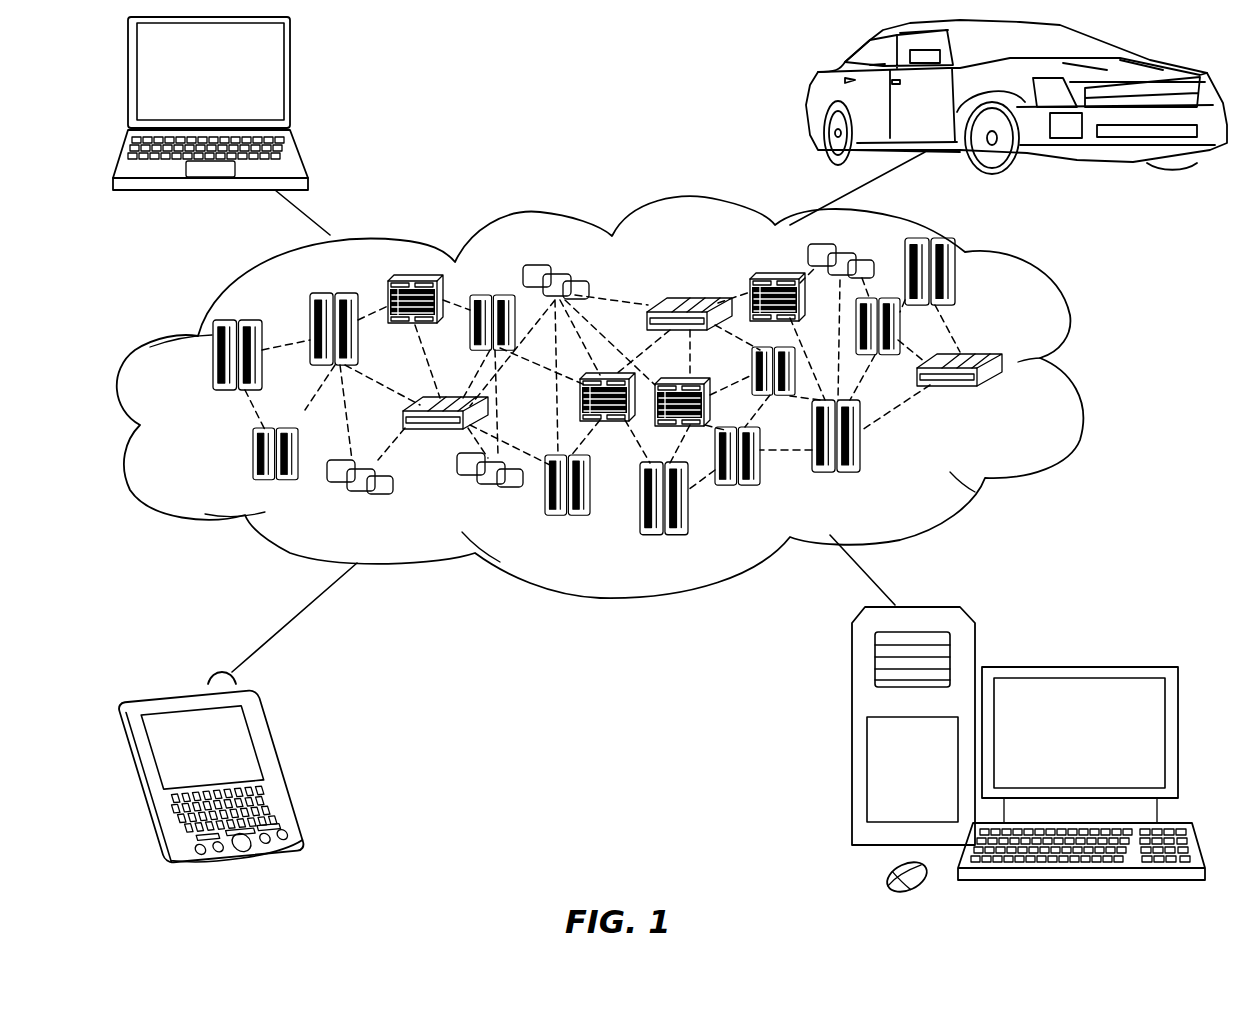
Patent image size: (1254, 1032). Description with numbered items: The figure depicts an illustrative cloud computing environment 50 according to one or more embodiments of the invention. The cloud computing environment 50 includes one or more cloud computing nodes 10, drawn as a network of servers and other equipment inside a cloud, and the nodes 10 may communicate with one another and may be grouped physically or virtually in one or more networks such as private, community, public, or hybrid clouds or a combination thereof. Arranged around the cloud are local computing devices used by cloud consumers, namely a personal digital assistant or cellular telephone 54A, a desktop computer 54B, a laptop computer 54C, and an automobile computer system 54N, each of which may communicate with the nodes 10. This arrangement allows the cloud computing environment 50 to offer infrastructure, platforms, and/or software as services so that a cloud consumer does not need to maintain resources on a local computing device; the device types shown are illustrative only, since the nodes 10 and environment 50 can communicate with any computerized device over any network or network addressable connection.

The cloud computing environment 50 is at (1076, 368).
The cloud computing nodes 10 is at (1010, 399).
The personal digital assistant or cellular telephone 54A is at (282, 763).
The desktop computer 54B is at (1077, 667).
The laptop computer 54C is at (293, 80).
The automobile computer system 54N is at (808, 92).